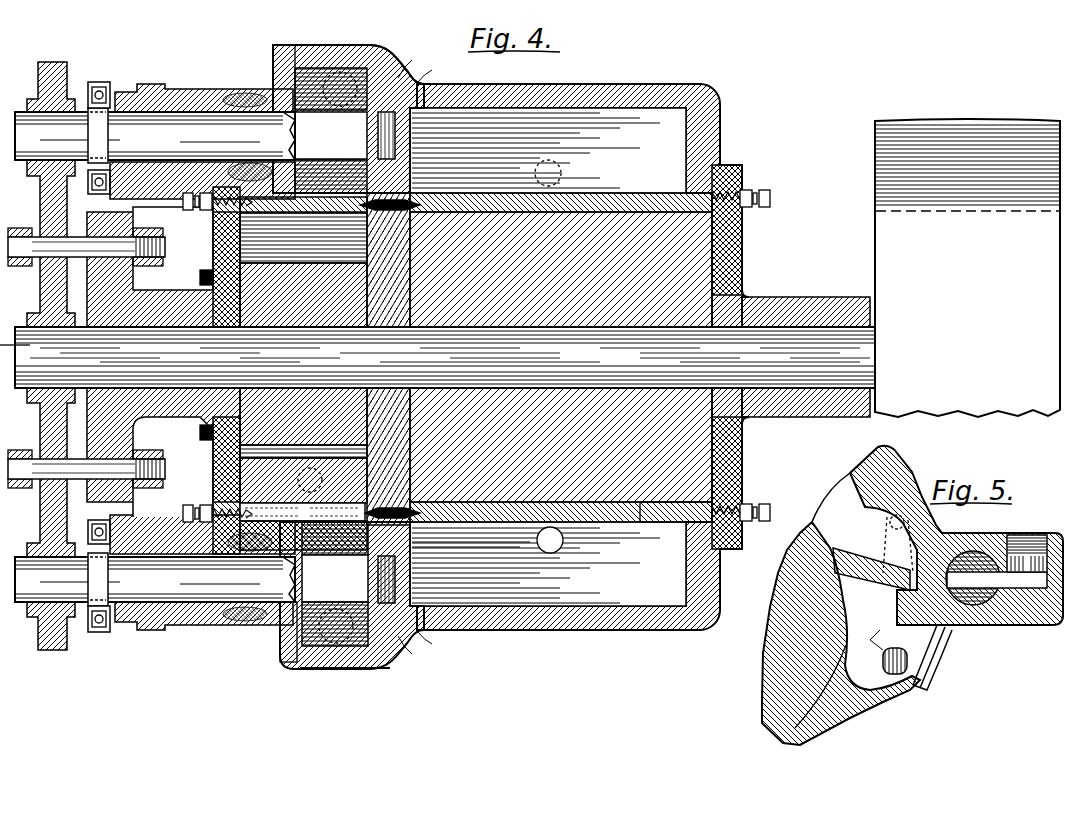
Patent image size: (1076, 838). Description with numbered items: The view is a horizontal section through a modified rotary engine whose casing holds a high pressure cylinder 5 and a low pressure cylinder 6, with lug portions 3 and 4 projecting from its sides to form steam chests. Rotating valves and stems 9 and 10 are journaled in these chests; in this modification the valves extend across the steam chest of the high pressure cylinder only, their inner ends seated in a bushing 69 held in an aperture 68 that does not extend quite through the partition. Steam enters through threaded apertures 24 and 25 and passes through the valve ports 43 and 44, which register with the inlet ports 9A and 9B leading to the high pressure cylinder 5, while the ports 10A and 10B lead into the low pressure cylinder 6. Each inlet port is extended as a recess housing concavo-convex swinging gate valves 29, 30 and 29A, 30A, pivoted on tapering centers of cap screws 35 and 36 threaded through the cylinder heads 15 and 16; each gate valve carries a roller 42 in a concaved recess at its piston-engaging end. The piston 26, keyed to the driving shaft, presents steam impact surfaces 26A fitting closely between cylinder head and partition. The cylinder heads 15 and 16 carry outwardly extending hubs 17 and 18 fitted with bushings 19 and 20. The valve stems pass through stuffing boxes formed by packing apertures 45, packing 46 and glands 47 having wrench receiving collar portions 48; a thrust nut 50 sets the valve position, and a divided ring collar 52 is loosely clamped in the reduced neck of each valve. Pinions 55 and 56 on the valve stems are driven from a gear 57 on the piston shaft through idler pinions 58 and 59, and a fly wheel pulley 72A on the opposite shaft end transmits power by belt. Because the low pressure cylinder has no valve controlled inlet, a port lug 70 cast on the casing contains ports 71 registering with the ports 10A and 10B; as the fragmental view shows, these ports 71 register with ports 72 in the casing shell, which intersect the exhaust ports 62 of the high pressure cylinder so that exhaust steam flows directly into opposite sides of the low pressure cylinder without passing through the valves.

In FIG. 4, the projecting lug portion 3 is at (328, 45).
In FIG. 4, the projecting lug portion 4 is at (312, 670).
In FIG. 4, the high pressure cylinder 5 is at (213, 252).
In FIG. 4, the low pressure cylinder 6 is at (744, 236).
In FIG. 4, the rotating valve and stem 9 is at (155, 136).
In FIG. 4, the steam inlet port 9A is at (280, 84).
In FIG. 4, the steam inlet port 9B is at (286, 668).
In FIG. 5, the steam inlet port 9B is at (1032, 585).
In FIG. 4, the rotating valve and stem 10 is at (155, 579).
In FIG. 5, the rotating valve and stem 10 is at (970, 556).
In FIG. 4, the steam inlet port 10A is at (630, 108).
In FIG. 4, the steam inlet port 10B is at (630, 625).
In FIG. 4, the cylinder head 15 is at (213, 456).
In FIG. 4, the cylinder head 16 is at (744, 462).
In FIG. 4, the outwardly extending hub 17 is at (163, 452).
In FIG. 4, the outwardly extending hub 18 is at (808, 417).
In FIG. 4, the bushing 19 is at (156, 325).
In FIG. 4, the bushing 20 is at (798, 312).
In FIG. 4, the steam entrance aperture 24 is at (400, 52).
In FIG. 4, the steam entrance aperture 25 is at (355, 669).
In FIG. 5, the steam entrance aperture 25 is at (1027, 548).
In FIG. 4, the piston 26 is at (302, 330).
In FIG. 5, the piston 26 is at (783, 647).
In FIG. 4, the steam impact surface 26A is at (624, 245).
In FIG. 4, the swinging gate valve 29 is at (322, 205).
In FIG. 4, the swinging gate valve 29A is at (505, 195).
In FIG. 5, the swinging gate valve 30 is at (871, 576).
In FIG. 4, the swinging gate valve 30A is at (660, 522).
In FIG. 4, the cap screw 35 is at (183, 203).
In FIG. 4, the cap screw 36 is at (183, 515).
In FIG. 4, the roller 42 is at (302, 447).
In FIG. 5, the roller 42 is at (838, 550).
In FIG. 4, the valve steam inlet port 43 is at (331, 113).
In FIG. 4, the valve steam inlet port 44 is at (335, 584).
In FIG. 4, the packing aperture 45 is at (220, 630).
In FIG. 4, the packing 46 is at (246, 630).
In FIG. 4, the gland 47 is at (142, 90).
In FIG. 4, the wrench receiving collar portion 48 is at (110, 90).
In FIG. 4, the thrust nut 50 is at (303, 383).
In FIG. 4, the divided ring collar 52 is at (108, 134).
In FIG. 4, the pinion 55 is at (54, 62).
In FIG. 4, the pinion 56 is at (40, 532).
In FIG. 4, the gear 57 is at (40, 297).
In FIG. 4, the idler pinion 58 is at (30, 232).
In FIG. 4, the idler pinion 59 is at (40, 442).
In FIG. 4, the exhaust port of high pressure cylinder 62 is at (388, 359).
In FIG. 5, the exhaust port of high pressure cylinder 62 is at (880, 656).
In FIG. 4, the aperture 68 is at (398, 80).
In FIG. 4, the bushing 69 is at (422, 84).
In FIG. 5, the port lug 70 is at (943, 656).
In FIG. 4, the port 71 is at (560, 548).
In FIG. 5, the port 71 is at (951, 633).
In FIG. 4, the port 72 is at (506, 540).
In FIG. 5, the port 72 is at (928, 673).
In FIG. 4, the fly wheel pulley 72A is at (967, 268).